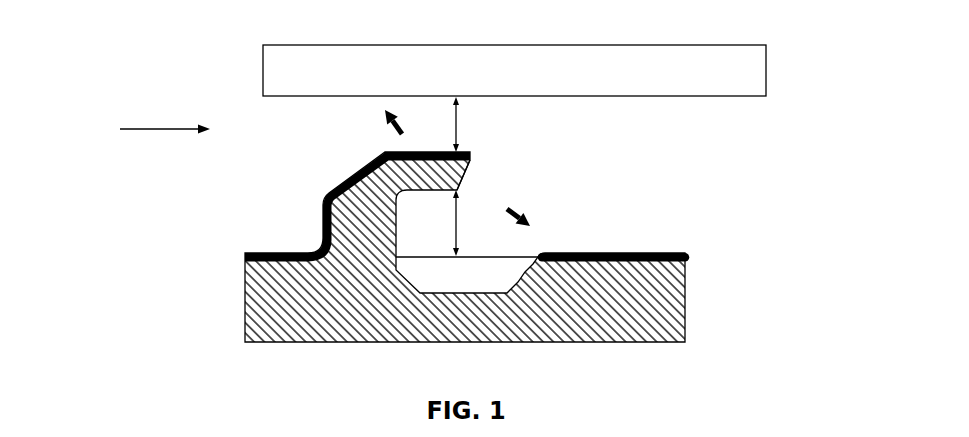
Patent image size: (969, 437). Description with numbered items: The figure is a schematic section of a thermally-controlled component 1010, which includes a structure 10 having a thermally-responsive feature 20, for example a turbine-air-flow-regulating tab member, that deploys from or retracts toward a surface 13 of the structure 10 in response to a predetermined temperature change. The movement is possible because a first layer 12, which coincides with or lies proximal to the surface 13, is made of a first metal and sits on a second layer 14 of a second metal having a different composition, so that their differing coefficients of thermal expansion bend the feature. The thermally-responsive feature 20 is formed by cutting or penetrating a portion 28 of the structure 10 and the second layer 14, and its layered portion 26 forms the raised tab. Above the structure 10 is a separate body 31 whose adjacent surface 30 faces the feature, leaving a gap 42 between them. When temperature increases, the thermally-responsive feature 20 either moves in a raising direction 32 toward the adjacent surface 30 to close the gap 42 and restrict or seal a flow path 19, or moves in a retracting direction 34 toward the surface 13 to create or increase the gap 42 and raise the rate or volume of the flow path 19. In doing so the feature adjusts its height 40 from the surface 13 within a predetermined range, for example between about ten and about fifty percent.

The thermally-controlled component 1010 is at (197, 78).
The structure 10 is at (680, 307).
The first layer 12 is at (528, 256).
The surface 13 is at (702, 256).
The second layer 14 is at (270, 250).
The flow path 19 is at (153, 128).
The thermally-responsive features 20 is at (484, 151).
The layered portion 26 is at (470, 152).
The portion 28 is at (468, 194).
The adjacent surface 30 is at (700, 97).
The separate body 31 is at (778, 57).
The raising direction 32 is at (395, 130).
The retracting direction 34 is at (517, 205).
The height 40 is at (455, 222).
The gap 42 is at (453, 118).